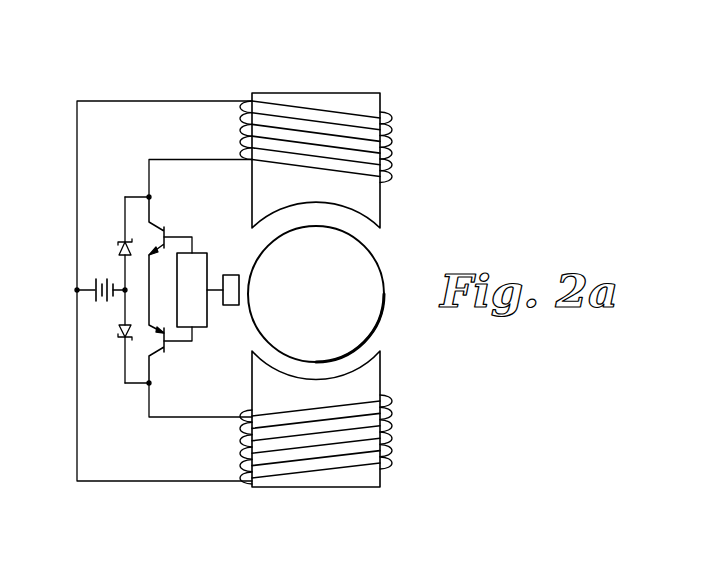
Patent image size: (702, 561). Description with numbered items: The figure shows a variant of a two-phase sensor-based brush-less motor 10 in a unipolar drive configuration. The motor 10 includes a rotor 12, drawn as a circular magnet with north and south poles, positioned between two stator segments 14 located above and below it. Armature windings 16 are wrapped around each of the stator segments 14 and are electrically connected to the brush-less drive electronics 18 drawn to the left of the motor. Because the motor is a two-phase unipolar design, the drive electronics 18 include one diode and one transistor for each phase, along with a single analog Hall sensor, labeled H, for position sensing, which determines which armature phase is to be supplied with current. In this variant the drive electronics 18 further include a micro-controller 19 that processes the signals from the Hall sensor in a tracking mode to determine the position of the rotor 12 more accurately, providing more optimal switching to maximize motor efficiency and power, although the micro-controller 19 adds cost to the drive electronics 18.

The two-phase sensor-based brush-less motor 10 is at (391, 61).
The rotor 12 is at (358, 308).
The stator segments 14 is at (352, 102).
The armature windings 16 is at (283, 113).
The brush-less drive electronics 18 is at (66, 250).
The micro-controller 19 is at (203, 328).